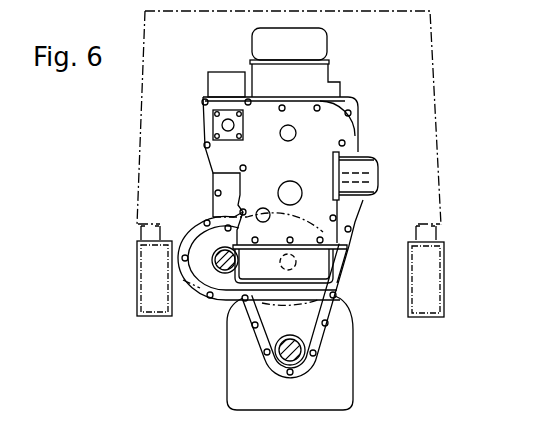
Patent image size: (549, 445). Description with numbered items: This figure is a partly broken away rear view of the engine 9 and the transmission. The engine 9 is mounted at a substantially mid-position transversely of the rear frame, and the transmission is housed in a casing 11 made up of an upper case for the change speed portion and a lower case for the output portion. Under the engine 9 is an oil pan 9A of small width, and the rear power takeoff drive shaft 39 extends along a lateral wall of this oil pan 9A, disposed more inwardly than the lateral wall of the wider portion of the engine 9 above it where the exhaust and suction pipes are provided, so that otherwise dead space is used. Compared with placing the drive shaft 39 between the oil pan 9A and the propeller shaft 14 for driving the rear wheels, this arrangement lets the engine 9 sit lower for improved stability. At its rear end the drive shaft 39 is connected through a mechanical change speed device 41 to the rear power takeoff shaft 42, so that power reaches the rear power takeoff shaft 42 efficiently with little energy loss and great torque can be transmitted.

The engine 9 is at (341, 81).
The oil pan 9A is at (250, 280).
The casing 11 is at (228, 362).
The propeller shaft for driving the rear wheels 14 is at (300, 362).
The rear power takeoff drive shaft 39 is at (216, 249).
The mechanical change speed device 41 is at (316, 300).
The rear power takeoff shaft 42 is at (337, 208).